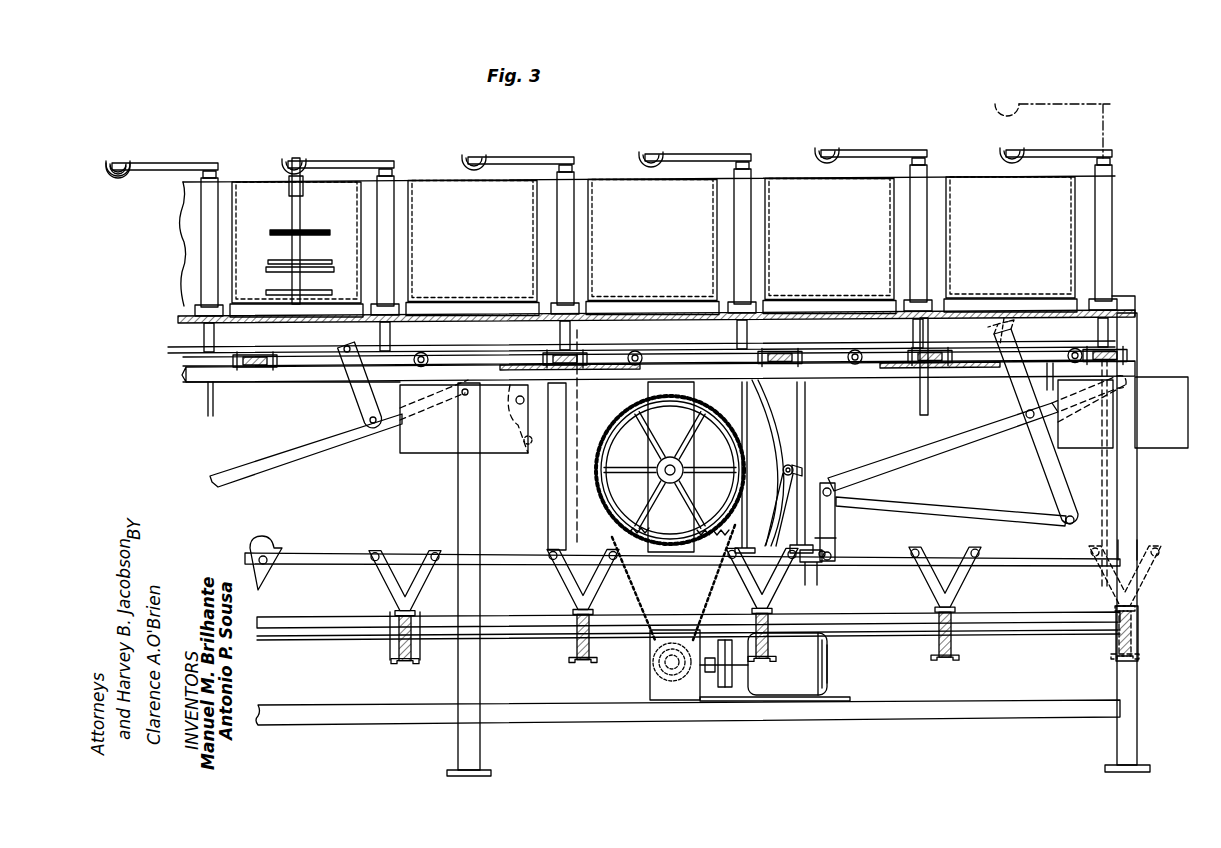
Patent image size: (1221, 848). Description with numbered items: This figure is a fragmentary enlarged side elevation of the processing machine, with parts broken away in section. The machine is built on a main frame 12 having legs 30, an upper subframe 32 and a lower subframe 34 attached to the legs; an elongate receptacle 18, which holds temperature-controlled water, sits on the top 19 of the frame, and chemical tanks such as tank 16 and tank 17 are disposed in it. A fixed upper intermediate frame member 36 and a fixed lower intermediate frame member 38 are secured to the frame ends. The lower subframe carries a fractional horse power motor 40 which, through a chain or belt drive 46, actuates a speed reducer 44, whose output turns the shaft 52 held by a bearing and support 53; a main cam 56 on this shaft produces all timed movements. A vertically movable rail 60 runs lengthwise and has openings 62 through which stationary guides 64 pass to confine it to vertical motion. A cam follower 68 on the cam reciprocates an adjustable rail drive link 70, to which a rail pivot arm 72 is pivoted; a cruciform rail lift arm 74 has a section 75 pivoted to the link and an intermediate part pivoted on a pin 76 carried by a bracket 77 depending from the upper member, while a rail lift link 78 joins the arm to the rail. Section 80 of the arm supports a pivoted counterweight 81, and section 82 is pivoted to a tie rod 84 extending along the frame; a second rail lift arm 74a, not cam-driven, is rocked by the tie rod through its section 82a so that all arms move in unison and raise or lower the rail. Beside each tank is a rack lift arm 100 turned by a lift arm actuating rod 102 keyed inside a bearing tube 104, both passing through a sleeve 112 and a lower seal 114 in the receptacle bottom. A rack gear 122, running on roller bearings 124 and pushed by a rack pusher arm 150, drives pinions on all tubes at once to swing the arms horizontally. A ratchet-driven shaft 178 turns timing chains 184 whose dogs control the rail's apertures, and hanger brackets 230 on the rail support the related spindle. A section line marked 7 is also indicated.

The section line 7- 7 is at (1000, 45).
The main frame 12 is at (1138, 470).
The tank 16 is at (785, 197).
The tank 17 is at (967, 196).
The elongate receptacle 18 is at (402, 192).
The top of frame 19 is at (546, 385).
The legs 30 is at (1137, 702).
The upper subframe 32 is at (1128, 312).
The lower subframe 34 is at (925, 710).
The upper intermediate frame member 36 is at (890, 372).
The lower intermediate frame member 38 is at (882, 614).
The fractional horse power motor 40 is at (827, 672).
The speed reducer 44 is at (690, 680).
The chain or belt drive 46 is at (742, 651).
The shaft 52 is at (670, 464).
The bearing and support 53 is at (660, 524).
The main cam 56 is at (775, 418).
The vertically movable rail 60 is at (722, 578).
The openings 62 is at (822, 558).
The stationary guides 64 is at (800, 480).
The cam follower 68 is at (794, 466).
The adjustable rail drive link 70 is at (942, 503).
The rail pivot arm 72 is at (834, 512).
The rail lift arm 74 is at (965, 441).
The rail lift arm 74a is at (318, 455).
The section of rail lift arm 75 is at (1060, 492).
The pin 76 is at (1025, 413).
The bracket 77 is at (1037, 390).
The rail lift link 78 is at (836, 538).
The section of rail lift arm 80 is at (1091, 414).
The pivoted counterweight 81 is at (1160, 380).
The section of arm 82 is at (1025, 372).
The section of arm 82a is at (357, 388).
The tie rod 84 is at (825, 338).
The rack lift arm 100 is at (167, 165).
The lift arm actuating rod 102 is at (213, 408).
The bearing tube 104 is at (205, 343).
The sleeve 112 is at (213, 203).
The lower seal 114 is at (200, 313).
The rack gear 122 is at (288, 367).
The roller bearings 124 is at (640, 354).
The rack pusher arm 150 is at (548, 470).
The shaft 178 is at (505, 640).
The timing chain 184 is at (958, 655).
The hanger bracket 230 is at (968, 575).